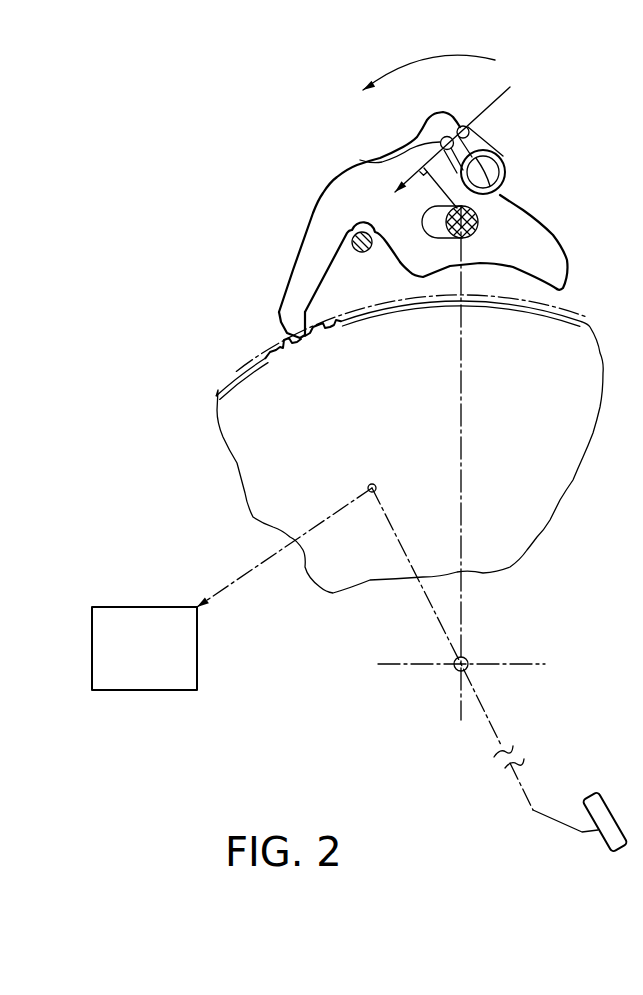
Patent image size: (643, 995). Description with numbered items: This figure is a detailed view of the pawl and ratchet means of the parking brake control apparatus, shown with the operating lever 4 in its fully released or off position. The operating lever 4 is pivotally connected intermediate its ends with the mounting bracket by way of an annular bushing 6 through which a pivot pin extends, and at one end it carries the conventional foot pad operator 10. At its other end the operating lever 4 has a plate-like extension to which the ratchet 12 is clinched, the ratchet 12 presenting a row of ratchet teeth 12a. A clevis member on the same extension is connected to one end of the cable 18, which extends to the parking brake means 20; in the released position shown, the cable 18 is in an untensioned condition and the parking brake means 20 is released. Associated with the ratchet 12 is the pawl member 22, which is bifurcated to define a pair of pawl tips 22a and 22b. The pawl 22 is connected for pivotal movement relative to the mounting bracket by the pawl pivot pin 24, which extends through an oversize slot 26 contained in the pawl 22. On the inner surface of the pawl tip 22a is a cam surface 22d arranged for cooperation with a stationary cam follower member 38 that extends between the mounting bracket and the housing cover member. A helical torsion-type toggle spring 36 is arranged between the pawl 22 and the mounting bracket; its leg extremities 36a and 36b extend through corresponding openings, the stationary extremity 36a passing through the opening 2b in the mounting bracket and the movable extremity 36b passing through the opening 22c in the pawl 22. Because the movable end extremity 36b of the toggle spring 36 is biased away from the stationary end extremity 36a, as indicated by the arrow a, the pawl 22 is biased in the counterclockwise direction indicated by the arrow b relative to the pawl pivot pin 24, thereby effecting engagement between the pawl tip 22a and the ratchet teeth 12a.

The opening 2b is at (459, 126).
The operating lever 4 is at (531, 802).
The annular bushing 6 is at (456, 669).
The foot pad operator 10 is at (598, 807).
The ratchet 12 is at (252, 398).
The ratchet teeth 12a is at (282, 338).
The cable 18 is at (282, 552).
The parking brake means 20 is at (197, 665).
The pawl member 22 is at (327, 192).
The pawl tip 22a is at (323, 343).
The pawl tip 22b is at (563, 289).
The opening 22c is at (438, 116).
The cam surface 22d is at (328, 268).
The pawl pivot pin 24 is at (477, 223).
The oversize slot 26 is at (432, 222).
The helical torsion-type toggle spring 36 is at (505, 167).
The leg extremity 36a is at (478, 90).
The leg extremity 36b is at (390, 153).
The cam follower member 38 is at (400, 273).
The arrow a is at (478, 90).
The arrow b is at (428, 60).